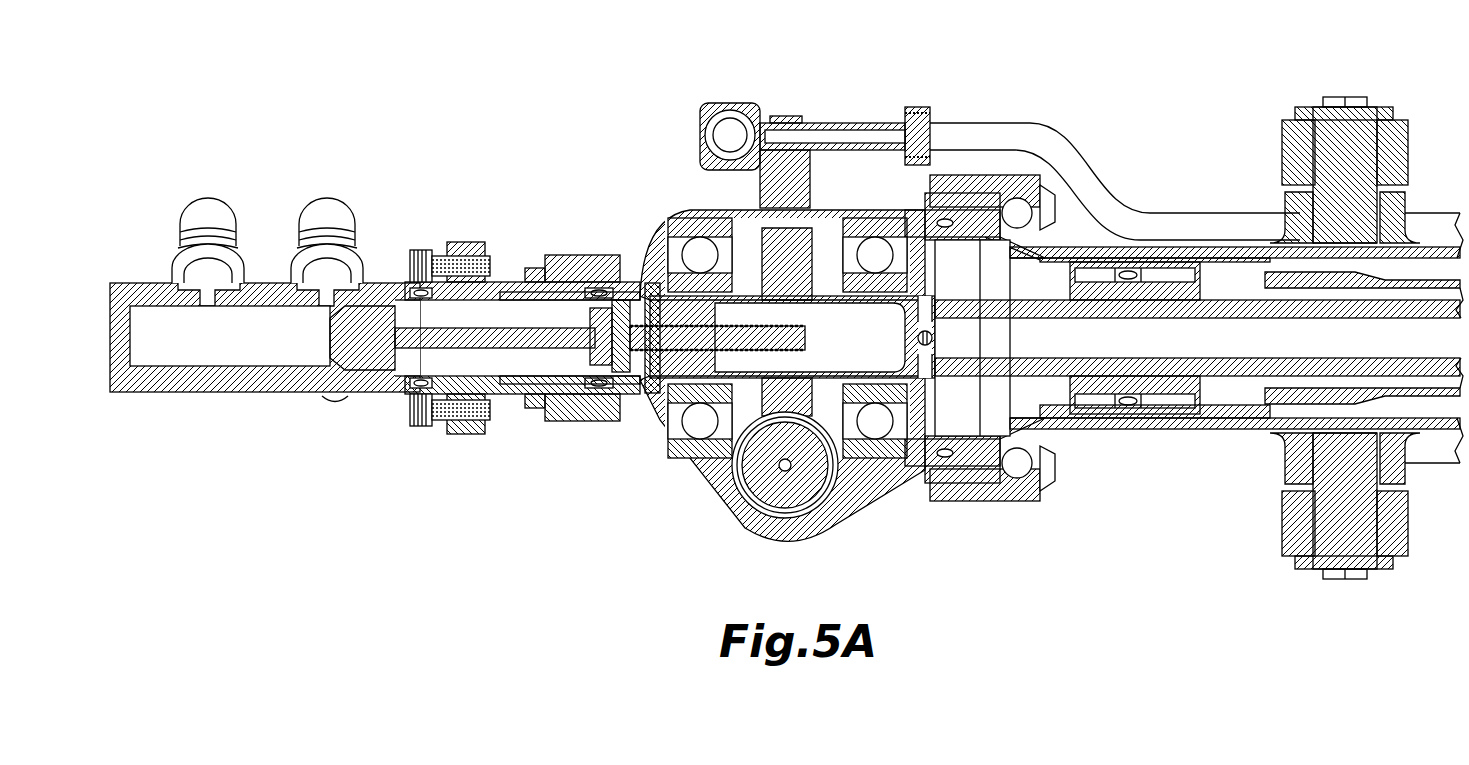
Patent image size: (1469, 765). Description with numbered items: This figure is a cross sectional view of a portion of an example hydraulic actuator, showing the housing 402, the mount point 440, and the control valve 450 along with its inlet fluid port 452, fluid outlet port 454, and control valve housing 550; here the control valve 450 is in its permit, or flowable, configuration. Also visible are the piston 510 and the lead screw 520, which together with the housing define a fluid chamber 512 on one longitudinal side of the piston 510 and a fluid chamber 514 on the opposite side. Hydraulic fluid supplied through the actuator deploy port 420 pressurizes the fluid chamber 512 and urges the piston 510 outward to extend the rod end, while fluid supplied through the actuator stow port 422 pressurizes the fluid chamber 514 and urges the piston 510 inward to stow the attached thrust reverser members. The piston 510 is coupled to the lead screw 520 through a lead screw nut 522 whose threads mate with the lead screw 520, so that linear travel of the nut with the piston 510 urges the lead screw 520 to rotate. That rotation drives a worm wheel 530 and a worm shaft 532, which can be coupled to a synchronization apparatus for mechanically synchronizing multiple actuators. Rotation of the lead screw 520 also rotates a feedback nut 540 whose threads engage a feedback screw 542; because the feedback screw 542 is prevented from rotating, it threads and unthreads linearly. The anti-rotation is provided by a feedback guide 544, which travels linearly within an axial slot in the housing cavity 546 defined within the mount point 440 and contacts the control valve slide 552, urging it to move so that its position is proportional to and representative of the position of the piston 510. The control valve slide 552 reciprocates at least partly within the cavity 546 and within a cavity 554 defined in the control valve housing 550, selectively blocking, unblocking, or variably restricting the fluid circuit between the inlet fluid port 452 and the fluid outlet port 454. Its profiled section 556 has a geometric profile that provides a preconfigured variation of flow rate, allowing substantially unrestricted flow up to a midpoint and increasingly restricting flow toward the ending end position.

The housing 402 is at (1130, 430).
The actuator deploy port 420 is at (745, 505).
The actuator stow port 422 is at (730, 118).
The mount point 440 is at (487, 288).
The control valve 450 is at (277, 212).
The inlet fluid port 452 is at (327, 200).
The fluid outlet port 454 is at (210, 200).
The piston 510 is at (1288, 278).
The fluid chamber 512 is at (968, 250).
The fluid chamber 514 is at (1435, 275).
The lead screw 520 is at (1220, 386).
The lead screw nut 522 is at (1150, 260).
The worm wheel 530 is at (807, 247).
The worm shaft 532 is at (825, 500).
The feedback nut 540 is at (652, 393).
The feedback screw 542 is at (688, 275).
The feedback guide 544 is at (620, 300).
The housing cavity 546 is at (545, 322).
The control valve housing 550 is at (110, 323).
The control valve slide 552 is at (373, 360).
The cavity 554 is at (245, 350).
The profiled section 556 is at (335, 410).